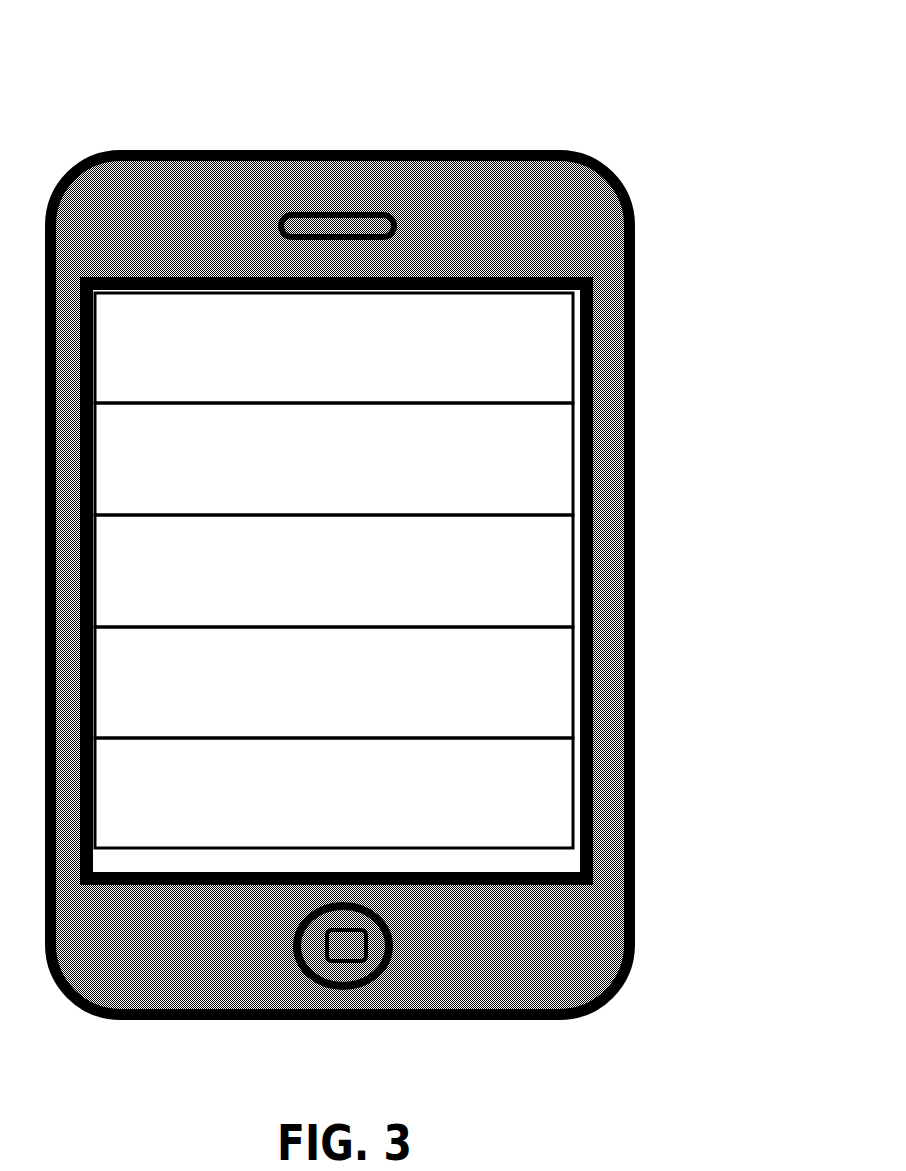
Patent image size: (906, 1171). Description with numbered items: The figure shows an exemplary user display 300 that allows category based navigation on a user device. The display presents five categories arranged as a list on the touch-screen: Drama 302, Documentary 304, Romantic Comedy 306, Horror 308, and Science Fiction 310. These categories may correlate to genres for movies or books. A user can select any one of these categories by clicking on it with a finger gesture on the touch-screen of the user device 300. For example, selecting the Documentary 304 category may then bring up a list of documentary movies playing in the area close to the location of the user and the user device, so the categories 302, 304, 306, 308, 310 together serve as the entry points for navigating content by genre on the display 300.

The user display 300 is at (298, 107).
The Drama category 302 is at (530, 382).
The Documentary category 304 is at (530, 468).
The Romantic Comedy category 306 is at (547, 583).
The Horror category 308 is at (547, 672).
The Science Fiction category 310 is at (562, 797).